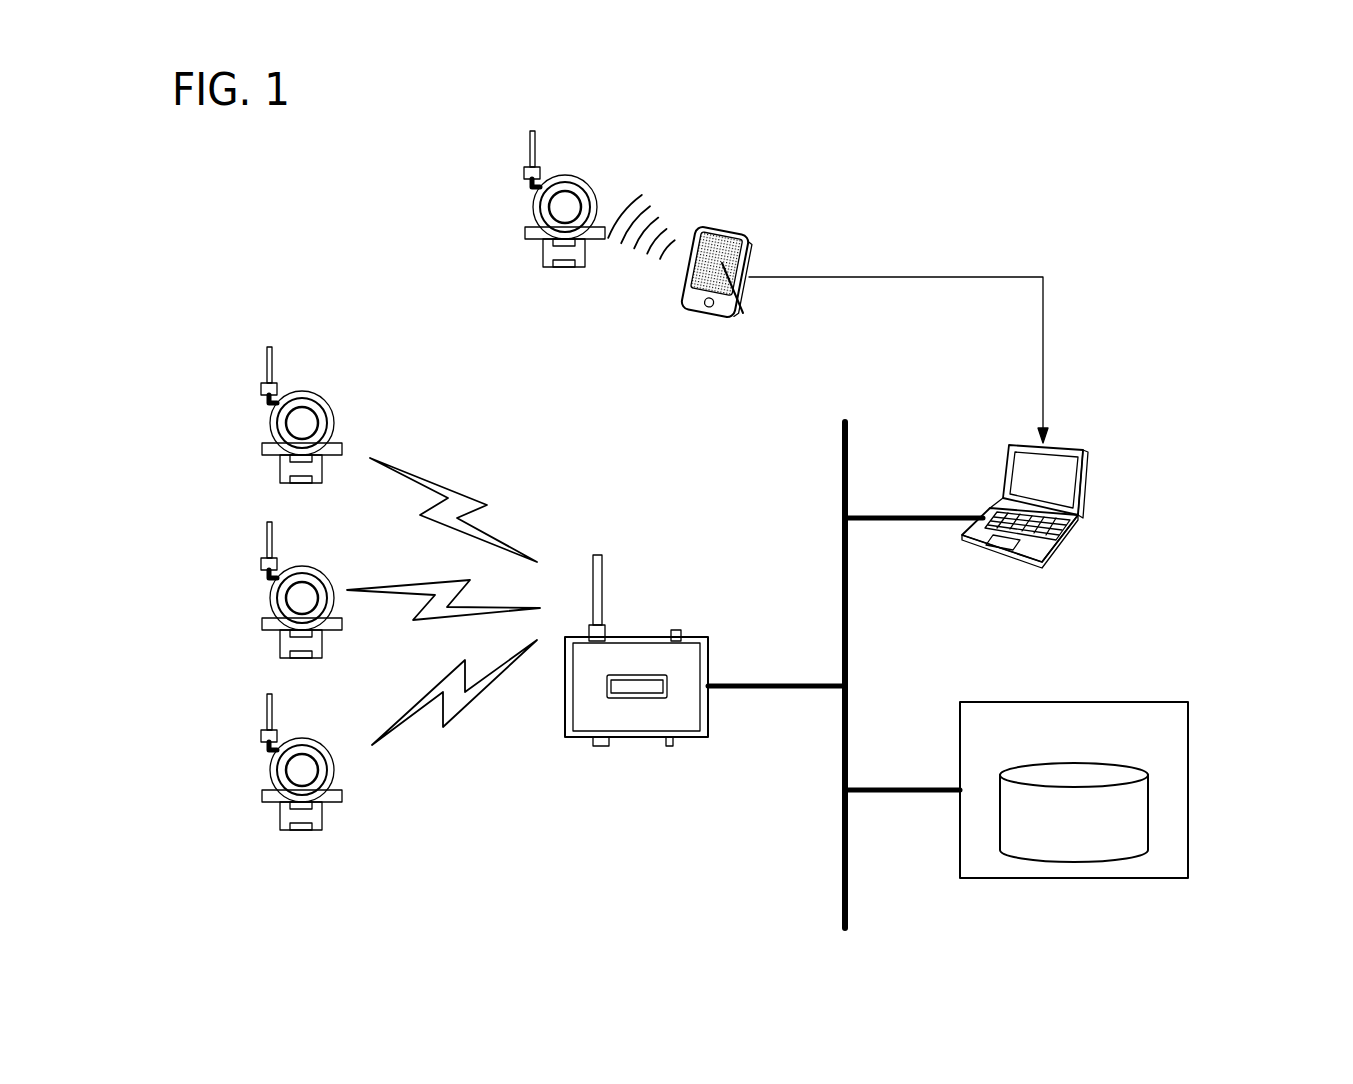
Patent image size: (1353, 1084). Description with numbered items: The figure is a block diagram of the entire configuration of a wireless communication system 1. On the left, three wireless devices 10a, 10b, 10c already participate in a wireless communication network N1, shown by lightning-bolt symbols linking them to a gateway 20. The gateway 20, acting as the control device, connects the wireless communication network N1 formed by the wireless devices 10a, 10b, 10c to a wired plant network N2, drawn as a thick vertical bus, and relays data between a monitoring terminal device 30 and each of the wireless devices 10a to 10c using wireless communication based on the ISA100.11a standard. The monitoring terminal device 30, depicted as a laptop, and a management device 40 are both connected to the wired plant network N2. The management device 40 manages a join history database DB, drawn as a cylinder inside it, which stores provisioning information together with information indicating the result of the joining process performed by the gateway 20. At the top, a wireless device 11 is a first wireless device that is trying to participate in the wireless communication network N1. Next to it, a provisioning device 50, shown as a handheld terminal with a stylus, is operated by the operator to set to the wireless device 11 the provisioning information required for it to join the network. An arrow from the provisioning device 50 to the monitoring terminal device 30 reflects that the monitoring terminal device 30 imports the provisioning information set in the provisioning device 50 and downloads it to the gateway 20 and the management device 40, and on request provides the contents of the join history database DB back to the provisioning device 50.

The wireless communication system 1 is at (1093, 228).
The wireless device 10a is at (318, 396).
The wireless device 10b is at (318, 571).
The wireless device 10c is at (318, 743).
The wireless device 11 is at (581, 179).
The gateway 20 is at (691, 636).
The monitoring terminal device 30 is at (1082, 448).
The management device 40 is at (1120, 702).
The provisioning device 50 is at (752, 229).
The wireless communication network N1 is at (457, 487).
The wired plant network N2 is at (848, 448).
The join history database DB is at (1150, 818).